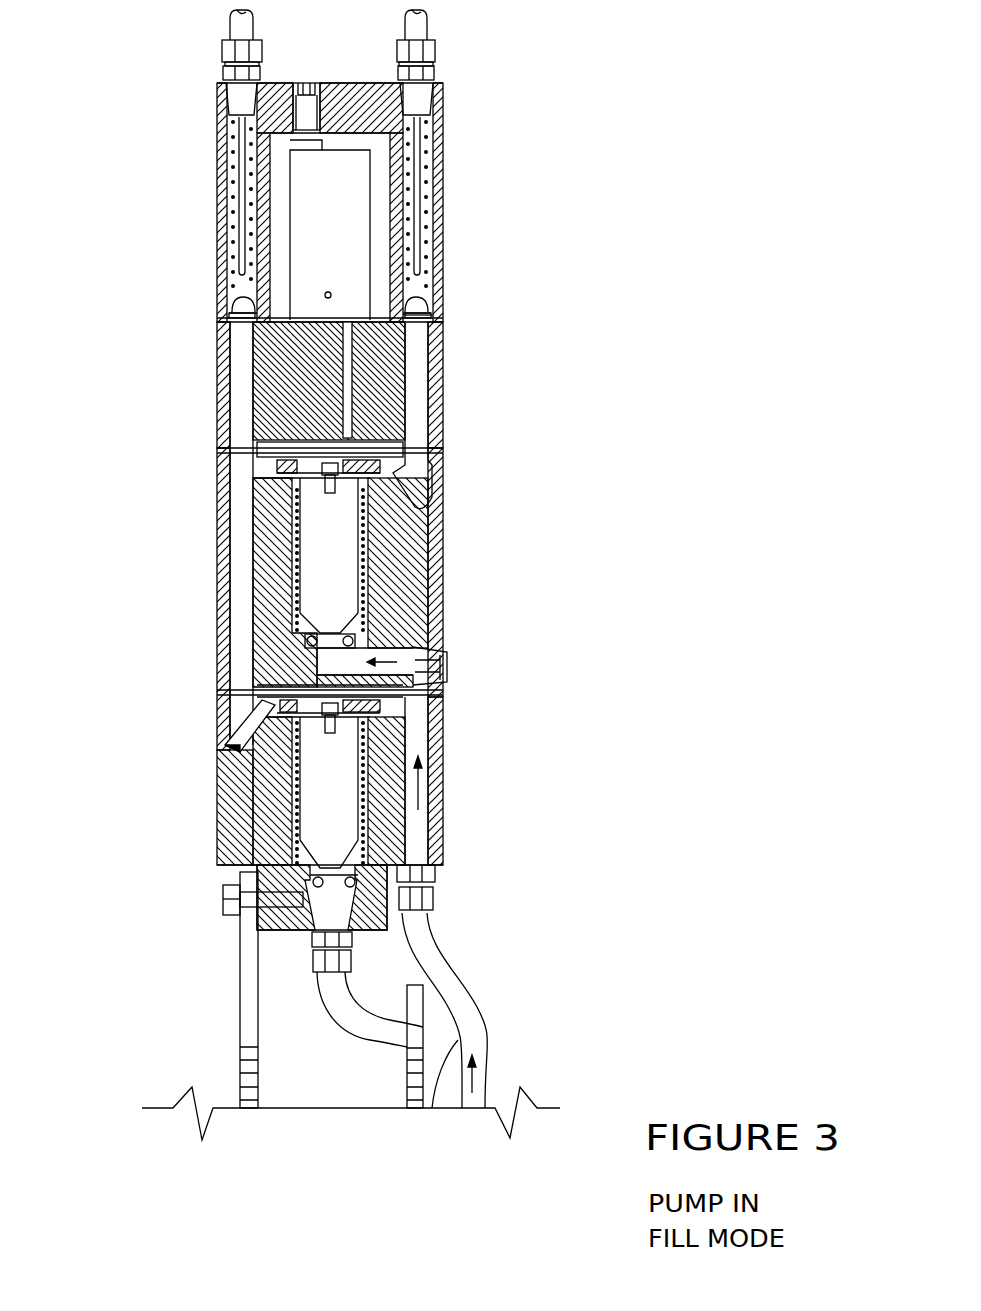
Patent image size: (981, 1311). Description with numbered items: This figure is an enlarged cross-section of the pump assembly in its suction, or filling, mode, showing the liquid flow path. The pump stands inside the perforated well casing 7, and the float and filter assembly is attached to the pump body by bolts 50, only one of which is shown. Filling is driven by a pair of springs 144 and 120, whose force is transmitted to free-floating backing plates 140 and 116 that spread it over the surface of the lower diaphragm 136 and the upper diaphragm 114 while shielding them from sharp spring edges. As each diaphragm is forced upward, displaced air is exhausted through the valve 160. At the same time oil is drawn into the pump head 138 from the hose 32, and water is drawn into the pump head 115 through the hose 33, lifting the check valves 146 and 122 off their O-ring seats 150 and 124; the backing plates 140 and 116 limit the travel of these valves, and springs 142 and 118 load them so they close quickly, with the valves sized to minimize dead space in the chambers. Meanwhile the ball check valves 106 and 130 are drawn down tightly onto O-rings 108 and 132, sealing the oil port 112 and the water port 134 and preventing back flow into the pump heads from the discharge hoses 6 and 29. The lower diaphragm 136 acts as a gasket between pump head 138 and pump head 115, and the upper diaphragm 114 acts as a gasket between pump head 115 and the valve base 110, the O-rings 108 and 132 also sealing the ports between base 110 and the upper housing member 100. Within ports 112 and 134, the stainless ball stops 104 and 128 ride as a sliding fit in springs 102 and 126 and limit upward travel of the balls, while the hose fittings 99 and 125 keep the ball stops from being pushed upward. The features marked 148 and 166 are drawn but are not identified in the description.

The discharge hose 6 is at (228, 28).
The hose fitting 99 is at (222, 57).
The upper housing member 100 is at (220, 127).
The spring 102 is at (234, 172).
The ball stop 104 is at (236, 233).
The check valve 106 is at (228, 298).
The O-ring 108 is at (228, 314).
The valve base 110 is at (216, 425).
The port 112 is at (236, 433).
The upper diaphragm 114 is at (218, 462).
The pump head 115 is at (218, 488).
The backing plate 116 is at (276, 458).
The spring 118 is at (318, 498).
The spring 120 is at (316, 568).
The check valve 122 is at (253, 660).
The O-ring seat 124 is at (232, 748).
The bolt 50 is at (223, 908).
The well casing 7 is at (238, 975).
The discharge hose 29 is at (428, 24).
The hose fitting 125 is at (433, 47).
The spring 126 is at (433, 144).
The ball stop 128 is at (433, 173).
The valve 160 is at (348, 258).
The check valve 130 is at (433, 292).
The O-ring 132 is at (433, 313).
The port 134 is at (426, 351).
The piston block 166 is at (380, 410).
The lower diaphragm 136 is at (443, 685).
The pump head 138 is at (443, 703).
The backing plate 140 is at (380, 714).
The spring 142 is at (335, 733).
The spring 144 is at (363, 793).
The check valve 146 is at (335, 825).
The O-ring 148 is at (350, 883).
The O-ring seat 150 is at (413, 913).
The hose 33 is at (470, 1032).
The hose 32 is at (447, 1088).